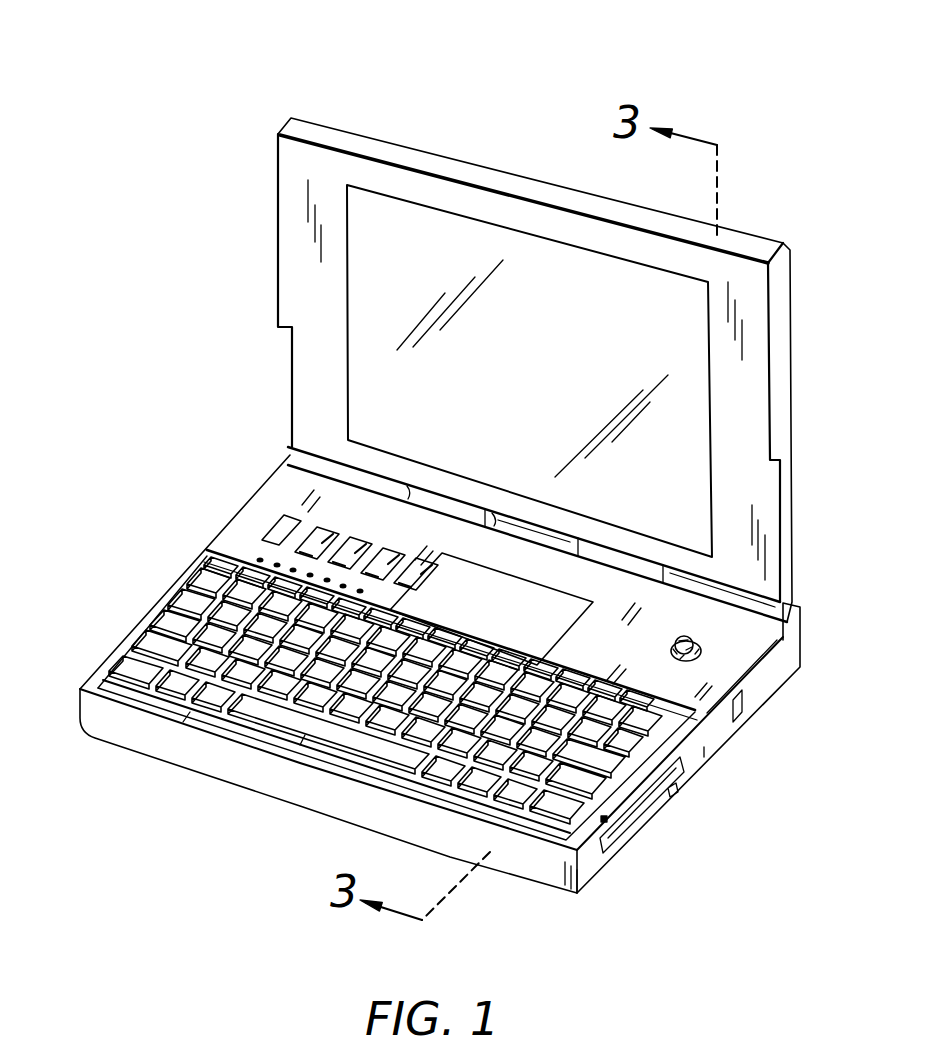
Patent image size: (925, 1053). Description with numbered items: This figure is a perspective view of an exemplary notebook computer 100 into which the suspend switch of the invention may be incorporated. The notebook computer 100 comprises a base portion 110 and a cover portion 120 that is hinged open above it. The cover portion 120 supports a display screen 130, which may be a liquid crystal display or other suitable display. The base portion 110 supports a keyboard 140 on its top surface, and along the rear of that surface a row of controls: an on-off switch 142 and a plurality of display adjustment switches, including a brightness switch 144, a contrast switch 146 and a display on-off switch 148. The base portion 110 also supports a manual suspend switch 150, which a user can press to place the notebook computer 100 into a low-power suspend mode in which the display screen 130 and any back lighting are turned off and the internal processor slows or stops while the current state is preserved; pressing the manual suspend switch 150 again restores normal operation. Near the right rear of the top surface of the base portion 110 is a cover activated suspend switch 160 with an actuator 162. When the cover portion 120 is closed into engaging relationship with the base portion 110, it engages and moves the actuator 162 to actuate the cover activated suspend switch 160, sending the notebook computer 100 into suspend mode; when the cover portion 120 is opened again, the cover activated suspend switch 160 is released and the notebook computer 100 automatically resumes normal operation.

The notebook computer 100 is at (187, 105).
The base portion 110 is at (97, 720).
The cover portion 120 is at (736, 243).
The display screen 130 is at (373, 292).
The keyboard 140 is at (243, 714).
The on-off switch 142 is at (290, 525).
The brightness switch 144 is at (308, 555).
The contrast switch 146 is at (355, 542).
The display on-off switch 148 is at (393, 557).
The manual suspend switch 150 is at (423, 573).
The cover activated suspend switch 160 is at (700, 648).
The actuator 162 is at (687, 640).